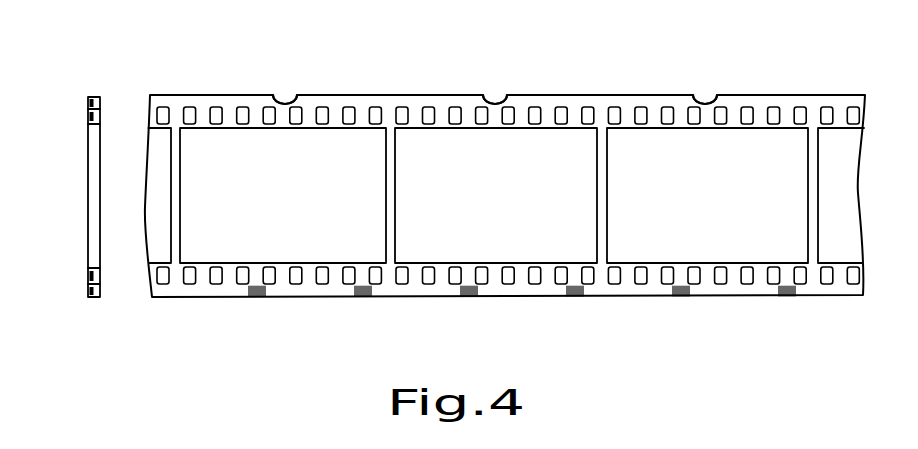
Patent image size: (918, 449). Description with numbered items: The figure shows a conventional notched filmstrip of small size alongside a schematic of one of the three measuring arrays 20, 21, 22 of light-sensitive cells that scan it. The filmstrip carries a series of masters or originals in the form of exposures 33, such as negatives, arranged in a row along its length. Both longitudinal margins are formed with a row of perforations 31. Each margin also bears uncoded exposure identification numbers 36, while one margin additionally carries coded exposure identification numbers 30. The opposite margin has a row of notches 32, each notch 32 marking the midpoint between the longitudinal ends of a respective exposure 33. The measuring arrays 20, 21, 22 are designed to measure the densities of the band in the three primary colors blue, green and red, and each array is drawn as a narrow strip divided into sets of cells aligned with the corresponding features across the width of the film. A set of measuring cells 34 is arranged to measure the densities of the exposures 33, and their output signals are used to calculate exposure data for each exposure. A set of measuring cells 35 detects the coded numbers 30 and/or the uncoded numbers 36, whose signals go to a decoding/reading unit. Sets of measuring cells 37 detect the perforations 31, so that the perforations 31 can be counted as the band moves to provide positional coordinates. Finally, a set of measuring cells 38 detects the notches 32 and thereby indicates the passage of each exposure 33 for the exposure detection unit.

The measuring array 20 is at (89, 170).
The measuring array 21 is at (89, 170).
The measuring array 22 is at (89, 170).
The coded exposure identification numbers 30 is at (253, 297).
The perforations 31 is at (347, 297).
The notches 32 is at (285, 102).
The exposures 33 is at (212, 248).
The measuring cells 34 is at (94, 206).
The measuring cells 35 is at (88, 294).
The uncoded exposure identification numbers 36 is at (308, 297).
The measuring cells 37 is at (88, 115).
The measuring cells 38 is at (88, 103).